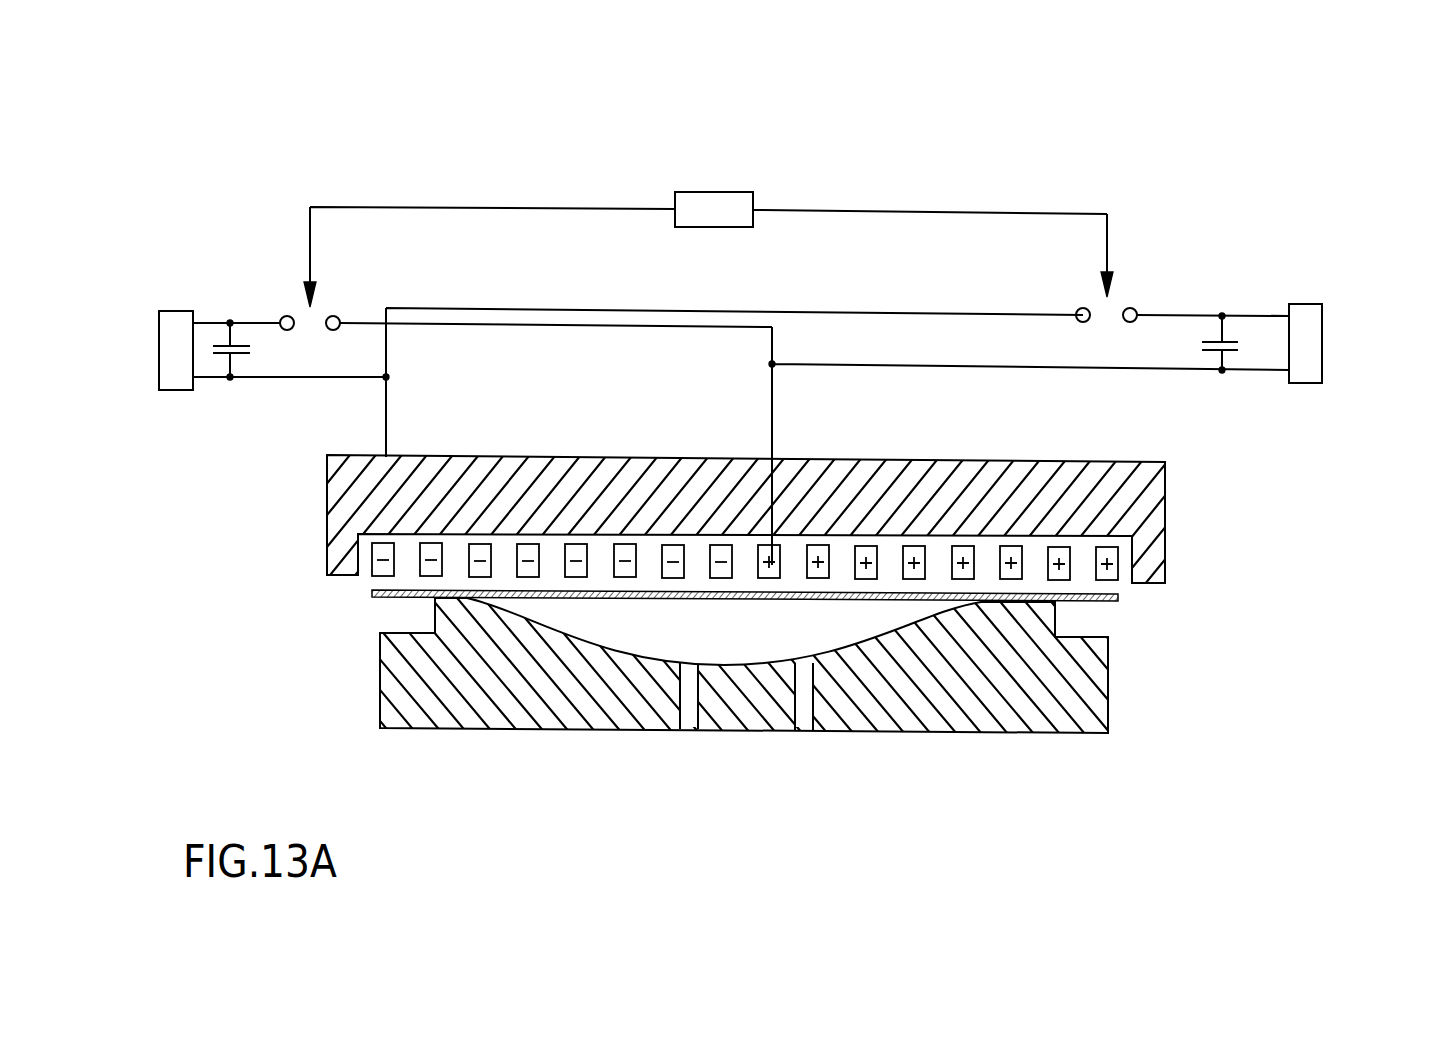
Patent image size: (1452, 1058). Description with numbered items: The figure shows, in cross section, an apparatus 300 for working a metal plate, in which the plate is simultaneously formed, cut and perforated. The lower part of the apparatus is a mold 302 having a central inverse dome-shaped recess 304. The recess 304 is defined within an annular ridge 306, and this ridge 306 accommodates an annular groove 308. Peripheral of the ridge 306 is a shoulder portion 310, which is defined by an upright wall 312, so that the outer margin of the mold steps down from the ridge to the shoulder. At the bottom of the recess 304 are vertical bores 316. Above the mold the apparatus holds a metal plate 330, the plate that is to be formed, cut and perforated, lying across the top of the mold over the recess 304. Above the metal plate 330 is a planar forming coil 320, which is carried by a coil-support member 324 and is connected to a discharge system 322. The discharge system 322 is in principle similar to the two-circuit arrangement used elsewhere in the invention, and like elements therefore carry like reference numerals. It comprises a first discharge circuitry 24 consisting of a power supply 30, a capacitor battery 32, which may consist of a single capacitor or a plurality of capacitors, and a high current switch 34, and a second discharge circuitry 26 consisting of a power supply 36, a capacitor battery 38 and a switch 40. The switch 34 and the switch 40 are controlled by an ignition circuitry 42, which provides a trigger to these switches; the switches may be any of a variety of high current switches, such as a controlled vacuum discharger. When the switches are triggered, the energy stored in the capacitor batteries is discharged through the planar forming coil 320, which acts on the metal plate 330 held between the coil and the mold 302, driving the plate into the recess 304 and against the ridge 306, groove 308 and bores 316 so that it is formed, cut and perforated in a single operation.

The discharge circuitry 24 is at (292, 363).
The discharge circuitry 26 is at (1157, 340).
The power supply 30 is at (176, 312).
The capacitor battery 32 is at (243, 347).
The high current switch 34 is at (313, 320).
The power supply 36 is at (1323, 345).
The capacitor battery 38 is at (1230, 342).
The switch 40 is at (1098, 308).
The ignition circuitry 42 is at (720, 227).
The apparatus 300 is at (1252, 584).
The mold 302 is at (1067, 707).
The inverse dome-shaped recess 304 is at (898, 622).
The annular ridge 306 is at (995, 603).
The annular groove 308 is at (468, 602).
The shoulder portion 310 is at (432, 625).
The upright wall 312 is at (432, 607).
The vertical bores 316 is at (690, 727).
The planar forming coil 320 is at (1112, 553).
The discharge system 322 is at (1240, 256).
The coil-support member 324 is at (1045, 462).
The metal plate 330 is at (768, 601).